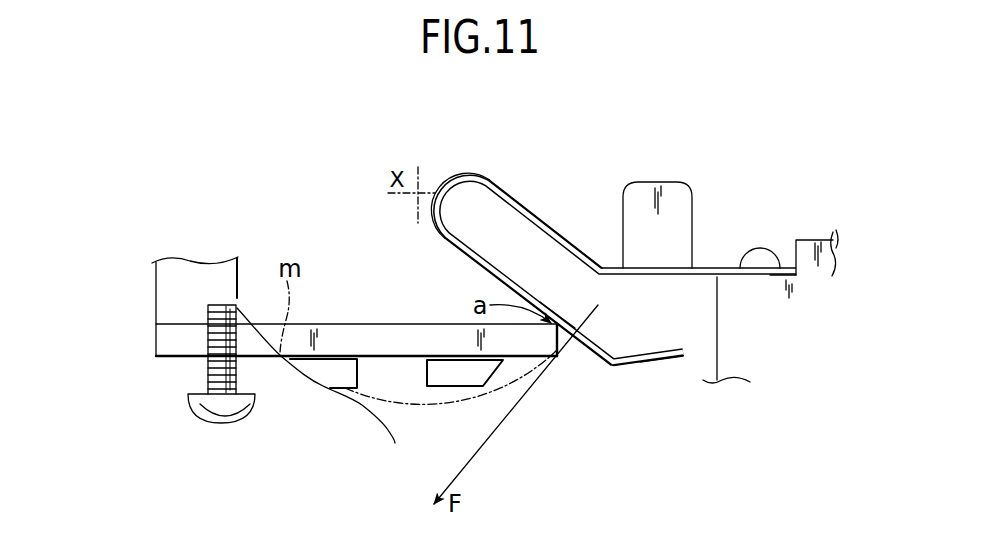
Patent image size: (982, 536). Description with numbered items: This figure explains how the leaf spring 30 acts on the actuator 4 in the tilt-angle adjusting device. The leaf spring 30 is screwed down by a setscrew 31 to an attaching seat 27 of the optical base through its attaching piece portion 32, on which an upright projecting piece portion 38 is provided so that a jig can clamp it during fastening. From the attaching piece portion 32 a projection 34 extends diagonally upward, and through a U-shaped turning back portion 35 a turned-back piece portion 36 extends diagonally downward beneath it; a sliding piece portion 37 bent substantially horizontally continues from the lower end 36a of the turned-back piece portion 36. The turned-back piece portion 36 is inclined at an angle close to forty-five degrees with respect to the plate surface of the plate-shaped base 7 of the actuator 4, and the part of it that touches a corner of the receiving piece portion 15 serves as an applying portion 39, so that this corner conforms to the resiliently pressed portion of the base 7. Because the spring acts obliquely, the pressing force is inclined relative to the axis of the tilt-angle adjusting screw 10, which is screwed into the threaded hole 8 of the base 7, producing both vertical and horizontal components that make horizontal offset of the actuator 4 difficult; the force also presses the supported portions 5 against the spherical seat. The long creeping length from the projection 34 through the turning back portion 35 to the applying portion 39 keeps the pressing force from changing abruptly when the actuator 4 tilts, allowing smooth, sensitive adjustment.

The actuator 4 is at (146, 342).
The supported portions 5 is at (427, 360).
The base 7 is at (339, 323).
The threaded hole 8 is at (206, 362).
The tilt-angle adjusting screw 10 is at (218, 407).
The receiving piece portion 15 is at (562, 330).
The attaching seat 27 is at (732, 285).
The leaf spring 30 is at (539, 186).
The setscrew 31 is at (770, 248).
The attaching piece portion 32 is at (788, 278).
The projection 34 is at (567, 238).
The U-shaped turning back portion 35 is at (468, 172).
The turned-back piece portion 36 is at (480, 263).
The lower end of turned-back piece portion 36a is at (614, 356).
The sliding piece portion 37 is at (654, 363).
The projecting piece portion 38 is at (656, 182).
The applying portion 39 is at (559, 318).